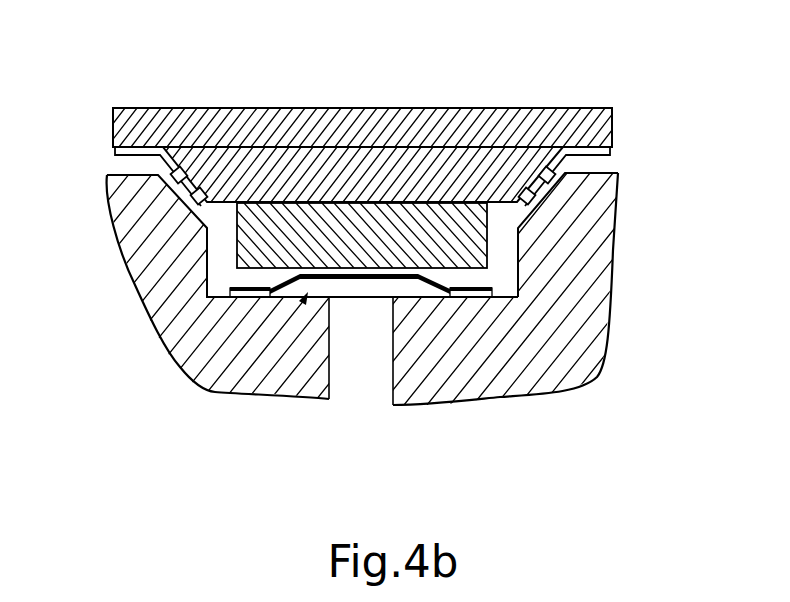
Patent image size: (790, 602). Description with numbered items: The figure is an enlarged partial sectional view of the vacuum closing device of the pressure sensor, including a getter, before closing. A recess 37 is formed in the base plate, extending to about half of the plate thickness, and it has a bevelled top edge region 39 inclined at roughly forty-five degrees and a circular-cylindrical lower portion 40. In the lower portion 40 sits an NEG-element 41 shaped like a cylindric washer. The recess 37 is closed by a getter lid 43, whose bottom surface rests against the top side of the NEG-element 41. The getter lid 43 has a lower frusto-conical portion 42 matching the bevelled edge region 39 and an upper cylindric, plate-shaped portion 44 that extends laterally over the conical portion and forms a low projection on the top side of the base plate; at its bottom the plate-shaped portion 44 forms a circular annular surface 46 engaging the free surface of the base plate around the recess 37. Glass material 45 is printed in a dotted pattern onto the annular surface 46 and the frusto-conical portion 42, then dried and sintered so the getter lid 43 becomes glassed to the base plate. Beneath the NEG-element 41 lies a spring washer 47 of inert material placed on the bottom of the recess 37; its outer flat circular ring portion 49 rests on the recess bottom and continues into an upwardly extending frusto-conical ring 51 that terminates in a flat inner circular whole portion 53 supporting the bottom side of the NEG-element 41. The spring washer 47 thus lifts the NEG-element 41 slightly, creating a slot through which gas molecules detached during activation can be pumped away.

The recess 37 is at (207, 265).
The edge region 39 is at (619, 177).
The lower portion 40 is at (488, 268).
The NEG-element 41 is at (520, 285).
The lower frusto-conical portion 42 is at (530, 176).
The getter lid 43 is at (172, 118).
The upper cylindric plate-shaped portion 44 is at (614, 118).
The glass material 45 is at (143, 150).
The circular annular surface 46 is at (580, 152).
The spring washer 47 is at (304, 297).
The portion 49 is at (243, 300).
The frusto-conical ring 51 is at (465, 298).
The inner circular whole portion 53 is at (352, 270).